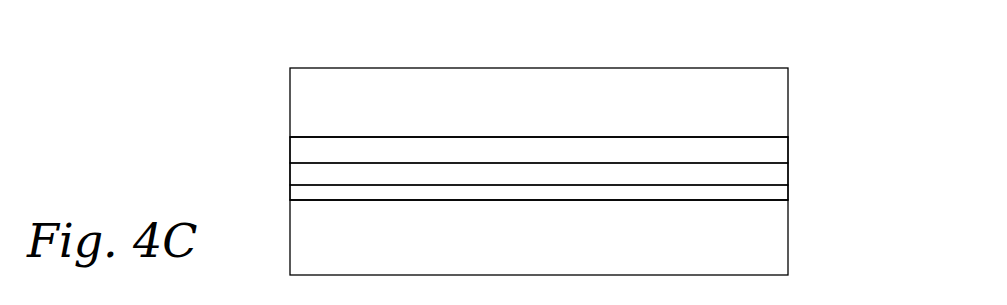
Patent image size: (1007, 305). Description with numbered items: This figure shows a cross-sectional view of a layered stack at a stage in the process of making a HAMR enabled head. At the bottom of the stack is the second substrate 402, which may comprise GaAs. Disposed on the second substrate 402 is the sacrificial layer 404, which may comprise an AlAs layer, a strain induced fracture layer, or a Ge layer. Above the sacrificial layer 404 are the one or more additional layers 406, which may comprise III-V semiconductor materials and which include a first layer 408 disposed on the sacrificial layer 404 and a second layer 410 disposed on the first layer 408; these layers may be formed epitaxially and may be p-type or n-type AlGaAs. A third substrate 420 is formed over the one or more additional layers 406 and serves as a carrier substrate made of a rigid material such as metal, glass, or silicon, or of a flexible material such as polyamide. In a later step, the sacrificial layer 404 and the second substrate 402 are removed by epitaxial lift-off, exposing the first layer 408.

The second substrate 402 is at (782, 243).
The sacrificial layer 404 is at (782, 192).
The one or more additional layers 406 is at (283, 137).
The first layer 408 is at (782, 169).
The second layer 410 is at (782, 144).
The third substrate 420 is at (782, 105).